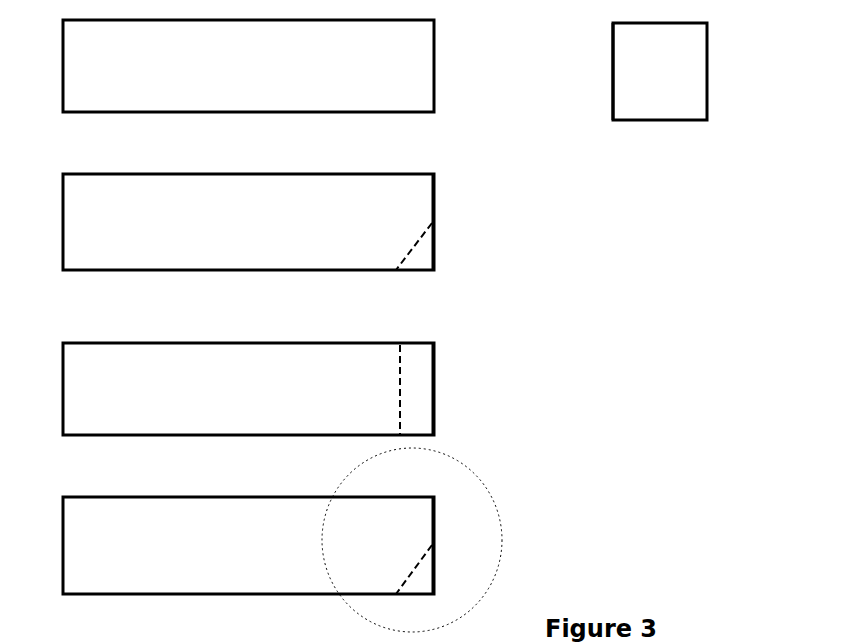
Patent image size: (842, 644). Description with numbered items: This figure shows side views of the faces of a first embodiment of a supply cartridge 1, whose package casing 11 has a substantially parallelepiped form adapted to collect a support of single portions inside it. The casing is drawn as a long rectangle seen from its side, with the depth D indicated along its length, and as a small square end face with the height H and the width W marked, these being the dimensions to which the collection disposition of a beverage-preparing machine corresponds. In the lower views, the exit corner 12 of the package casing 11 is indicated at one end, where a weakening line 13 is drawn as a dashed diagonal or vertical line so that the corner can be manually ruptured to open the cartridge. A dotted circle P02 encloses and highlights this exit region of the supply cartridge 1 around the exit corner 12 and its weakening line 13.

The supply cartridge 1 is at (232, 66).
The package casing 11 is at (385, 308).
The exit corner 12 is at (604, 118).
The cutting / separation line 13 is at (399, 257).
The depth D is at (431, 142).
The height H is at (750, 31).
The width W is at (704, 153).
The detail region of the pillar end P02 is at (431, 540).